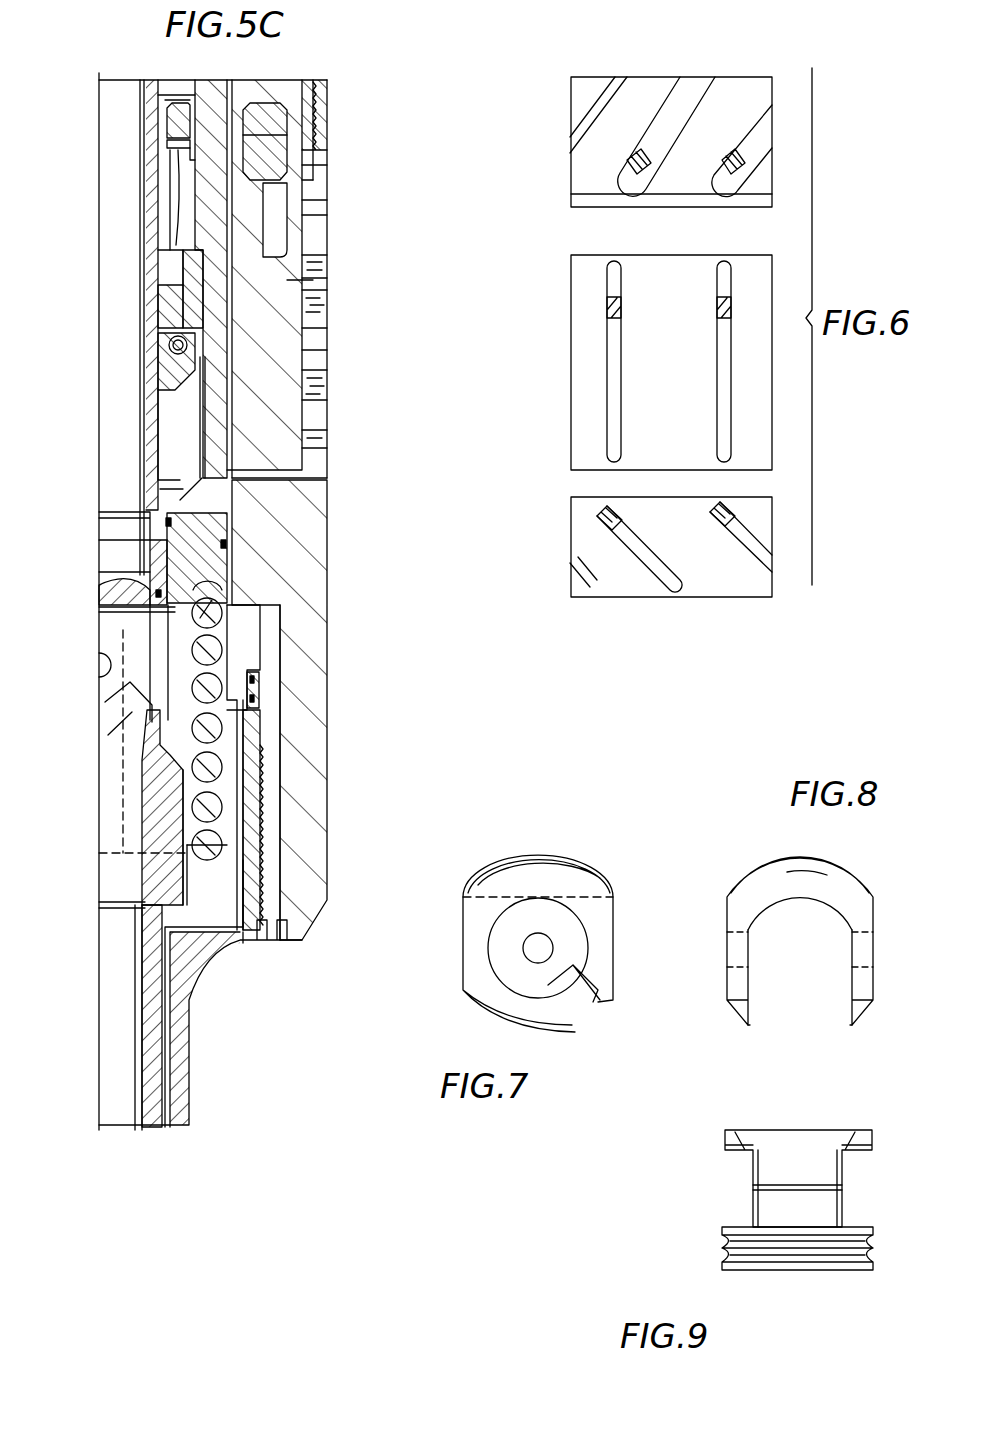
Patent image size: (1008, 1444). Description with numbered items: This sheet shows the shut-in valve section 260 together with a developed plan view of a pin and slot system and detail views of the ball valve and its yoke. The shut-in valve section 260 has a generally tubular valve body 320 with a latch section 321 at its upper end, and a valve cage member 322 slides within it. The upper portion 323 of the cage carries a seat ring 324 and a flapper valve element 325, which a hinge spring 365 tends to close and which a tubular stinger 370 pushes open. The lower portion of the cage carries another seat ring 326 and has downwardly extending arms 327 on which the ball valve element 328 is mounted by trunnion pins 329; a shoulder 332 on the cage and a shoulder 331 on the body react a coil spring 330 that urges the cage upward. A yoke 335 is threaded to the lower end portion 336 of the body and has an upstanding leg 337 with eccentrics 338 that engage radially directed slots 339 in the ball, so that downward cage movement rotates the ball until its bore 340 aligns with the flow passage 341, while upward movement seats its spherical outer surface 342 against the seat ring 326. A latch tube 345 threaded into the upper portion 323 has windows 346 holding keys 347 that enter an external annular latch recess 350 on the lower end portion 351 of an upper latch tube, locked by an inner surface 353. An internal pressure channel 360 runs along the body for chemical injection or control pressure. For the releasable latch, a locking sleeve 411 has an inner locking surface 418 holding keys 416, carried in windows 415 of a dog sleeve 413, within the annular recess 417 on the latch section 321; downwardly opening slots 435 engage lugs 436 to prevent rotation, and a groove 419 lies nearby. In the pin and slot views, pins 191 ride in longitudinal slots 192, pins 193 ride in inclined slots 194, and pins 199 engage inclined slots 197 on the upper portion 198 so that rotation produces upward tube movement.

In FIG. 5C, the lower end portion 351 is at (165, 90).
In FIG. 5C, the latch dogs or keys 347 is at (168, 118).
In FIG. 5C, the external annular latch recess 350 is at (172, 142).
In FIG. 5C, the windows 346 is at (172, 160).
In FIG. 5C, the latch tube 345 is at (178, 182).
In FIG. 5C, the inner surface 353 is at (188, 262).
In FIG. 5C, the flow passage 341 is at (125, 275).
In FIG. 5C, the seat ring 324 is at (168, 318).
In FIG. 5C, the stinger 370 is at (160, 368).
In FIG. 5C, the flapper valve element 325 is at (173, 432).
In FIG. 5C, the seat ring 326 is at (140, 548).
In FIG. 5C, the spherical outer surface 342 is at (150, 585).
In FIG. 7, the spherical outer surface 342 is at (565, 880).
In FIG. 8, the spherical outer surface 342 is at (832, 872).
In FIG. 5C, the ball valve element 328 is at (125, 608).
In FIG. 5C, the arms 327 is at (115, 652).
In FIG. 5C, the trunnion pins 329 is at (108, 688).
In FIG. 5C, the radially directed slots 339 is at (120, 715).
In FIG. 7, the radially directed slots 339 is at (593, 1000).
In FIG. 8, the radially directed slots 339 is at (738, 1010).
In FIG. 5C, the eccentrics 338 is at (145, 745).
In FIG. 7, the eccentrics 338 is at (621, 912).
In FIG. 8, the eccentrics 338 is at (879, 906).
In FIG. 9, the eccentrics 338 is at (727, 1140).
In FIG. 5C, the yoke 335 is at (105, 885).
In FIG. 9, the yoke 335 is at (857, 1208).
In FIG. 5C, the locking sleeve 411 is at (315, 92).
In FIG. 5C, the inner locking surface 418 is at (290, 118).
In FIG. 5C, the annular recess 417 is at (290, 136).
In FIG. 5C, the dogs or keys 416 is at (302, 150).
In FIG. 5C, the windows 415 is at (305, 172).
In FIG. 5C, the latch section 321 is at (255, 200).
In FIG. 5C, the groove 419 is at (305, 205).
In FIG. 5C, the dog sleeve 413 is at (306, 240).
In FIG. 5C, the shut-in valve section 260 is at (395, 252).
In FIG. 5C, the upper portion 323 is at (205, 310).
In FIG. 5C, the lugs 436 is at (305, 325).
In FIG. 5C, the hinge spring 365 is at (188, 346).
In FIG. 5C, the slots 435 is at (305, 380).
In FIG. 5C, the internal pressure channel 360 is at (235, 430).
In FIG. 5C, the valve body 320 is at (325, 470).
In FIG. 5C, the valve cage member 322 is at (225, 522).
In FIG. 5C, the shoulder 332 is at (225, 580).
In FIG. 5C, the bore 340 is at (218, 622).
In FIG. 8, the bore 340 is at (835, 915).
In FIG. 5C, the spring chamber 330 is at (212, 662).
In FIG. 5C, the upstanding leg 337 is at (170, 812).
In FIG. 9, the upstanding leg 337 is at (757, 1212).
In FIG. 5C, the shoulder 331 is at (250, 840).
In FIG. 5C, the lower end portion 336 is at (305, 897).
In FIG. 6, the inclined slots 197 is at (745, 85).
In FIG. 6, the upper portion 198 is at (682, 88).
In FIG. 6, the pins 199 is at (650, 177).
In FIG. 6, the pins 193 is at (720, 302).
In FIG. 6, the inclined slots 194 is at (722, 432).
In FIG. 6, the pins 191 is at (712, 524).
In FIG. 6, the longitudinal slots 192 is at (760, 548).